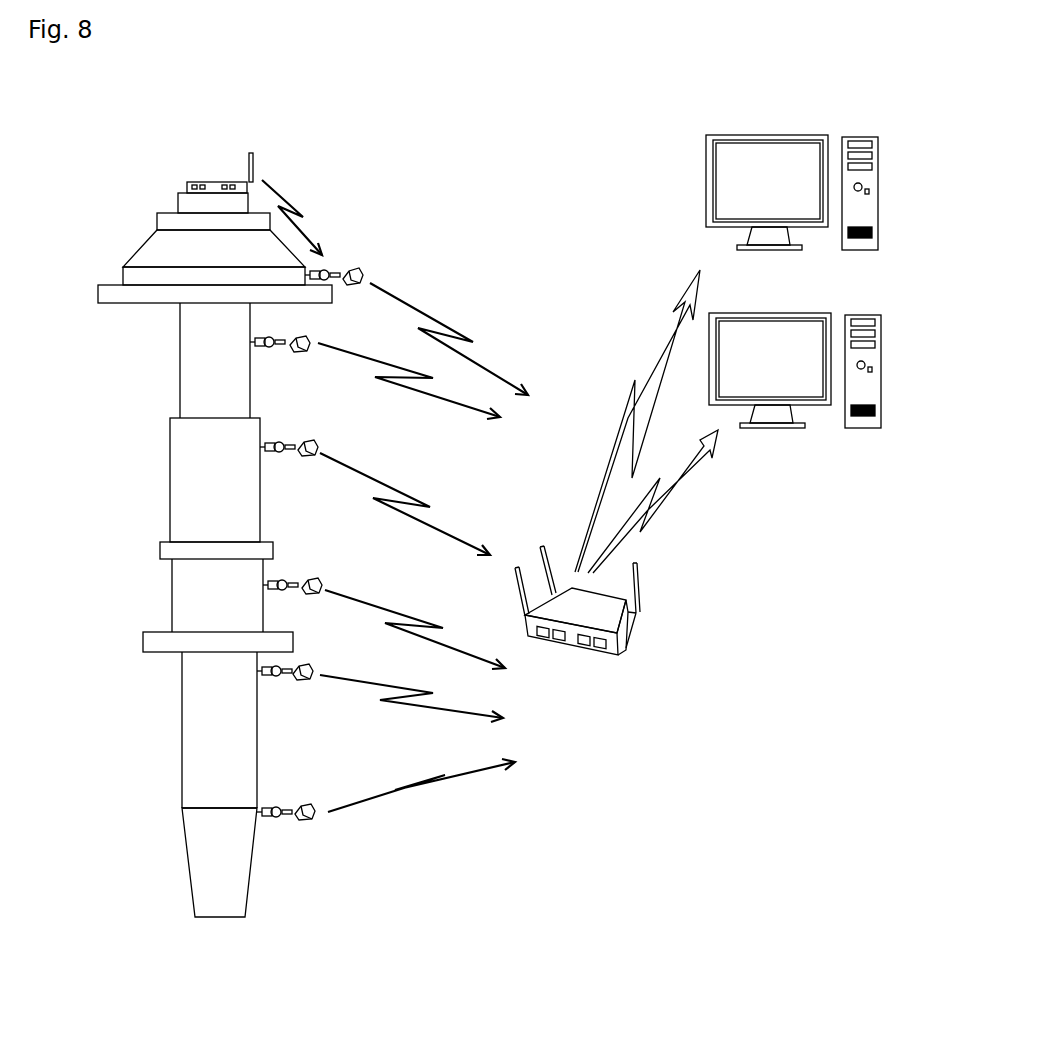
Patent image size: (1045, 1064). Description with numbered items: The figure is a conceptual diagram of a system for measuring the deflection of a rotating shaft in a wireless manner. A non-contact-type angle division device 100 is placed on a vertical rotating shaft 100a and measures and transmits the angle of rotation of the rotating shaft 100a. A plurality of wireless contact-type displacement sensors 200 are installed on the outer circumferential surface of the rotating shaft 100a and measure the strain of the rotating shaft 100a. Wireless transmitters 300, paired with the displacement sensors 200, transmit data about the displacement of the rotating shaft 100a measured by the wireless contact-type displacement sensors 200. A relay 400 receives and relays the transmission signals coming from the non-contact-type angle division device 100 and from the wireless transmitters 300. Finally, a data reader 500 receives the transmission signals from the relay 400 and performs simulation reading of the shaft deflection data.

The non-contact-type angle division device 100 is at (215, 182).
The rotating shaft 100a is at (196, 475).
The wireless contact-type displacement sensor 200 is at (327, 272).
The wireless transmitter 300 is at (360, 279).
The relay 400 is at (575, 648).
The data reader 500 is at (767, 135).